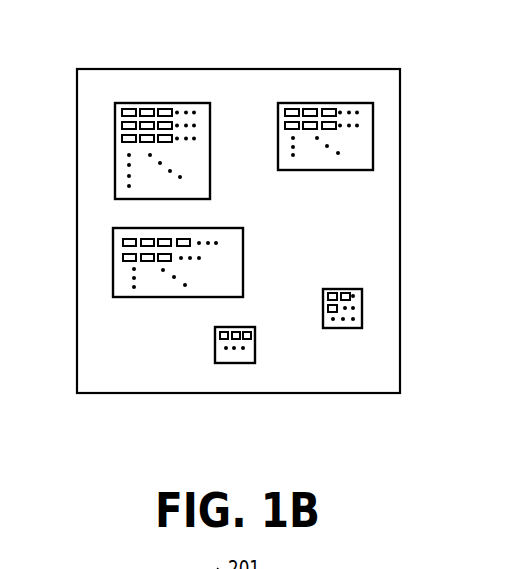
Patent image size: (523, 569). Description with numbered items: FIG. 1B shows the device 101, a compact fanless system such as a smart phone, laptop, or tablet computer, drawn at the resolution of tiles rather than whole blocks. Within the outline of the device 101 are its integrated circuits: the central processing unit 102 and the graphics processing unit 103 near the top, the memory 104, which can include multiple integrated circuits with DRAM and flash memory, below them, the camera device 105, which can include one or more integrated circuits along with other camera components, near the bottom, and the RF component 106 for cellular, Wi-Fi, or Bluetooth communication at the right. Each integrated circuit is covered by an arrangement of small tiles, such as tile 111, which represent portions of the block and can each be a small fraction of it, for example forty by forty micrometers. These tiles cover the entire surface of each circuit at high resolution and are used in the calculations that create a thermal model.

The device 101 is at (325, 69).
The tile 111 is at (121, 122).
The central processing unit 102 is at (116, 174).
The graphics processing unit 103 is at (373, 130).
The memory 104 is at (114, 268).
The camera device 105 is at (214, 348).
The RF component 106 is at (362, 312).